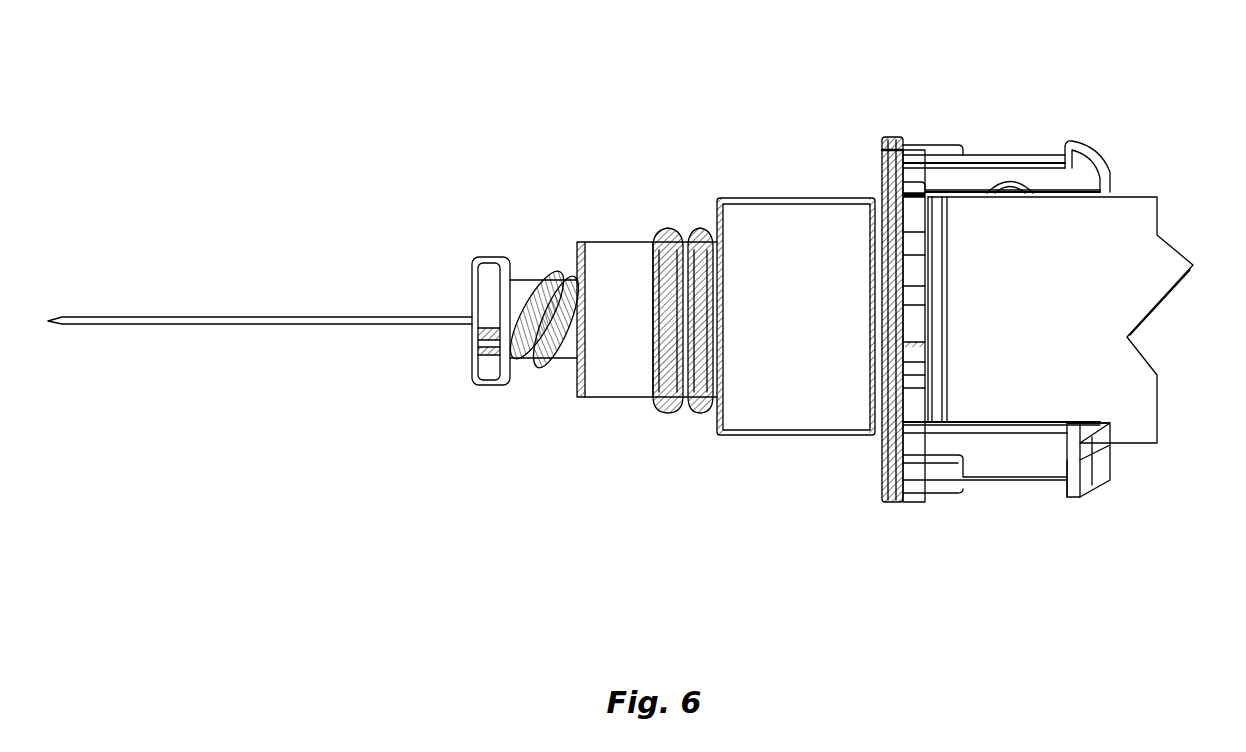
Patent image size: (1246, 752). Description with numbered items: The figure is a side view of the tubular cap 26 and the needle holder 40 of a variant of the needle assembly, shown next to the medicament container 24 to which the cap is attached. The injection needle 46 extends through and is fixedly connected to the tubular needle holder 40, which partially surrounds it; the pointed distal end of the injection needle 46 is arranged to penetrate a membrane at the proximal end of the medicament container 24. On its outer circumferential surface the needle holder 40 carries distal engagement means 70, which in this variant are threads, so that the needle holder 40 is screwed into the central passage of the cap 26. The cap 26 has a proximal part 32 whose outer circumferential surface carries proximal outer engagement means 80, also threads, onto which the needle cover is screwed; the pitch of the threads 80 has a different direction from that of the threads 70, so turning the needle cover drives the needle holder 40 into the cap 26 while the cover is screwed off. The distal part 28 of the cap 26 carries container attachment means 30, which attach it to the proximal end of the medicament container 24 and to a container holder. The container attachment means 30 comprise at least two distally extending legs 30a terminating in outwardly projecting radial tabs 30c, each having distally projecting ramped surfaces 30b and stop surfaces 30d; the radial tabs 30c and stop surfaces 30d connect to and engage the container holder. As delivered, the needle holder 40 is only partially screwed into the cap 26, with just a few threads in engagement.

The injection needle 46 is at (268, 316).
The tubular needle holder 40 is at (473, 222).
The distal engagement means 70 is at (548, 272).
The tubular cap 26 is at (634, 325).
The proximal part 32 is at (595, 373).
The proximal outer engagement means 80 is at (678, 368).
The distal part 28 is at (801, 354).
The container attachment means 30 is at (1000, 173).
The distally extending legs 30a is at (1008, 463).
The distally projecting ramped surfaces 30b is at (1090, 470).
The outwardly projecting radial tabs 30c is at (1085, 420).
The stop surfaces 30d is at (1067, 460).
The medicament container 24 is at (1030, 322).